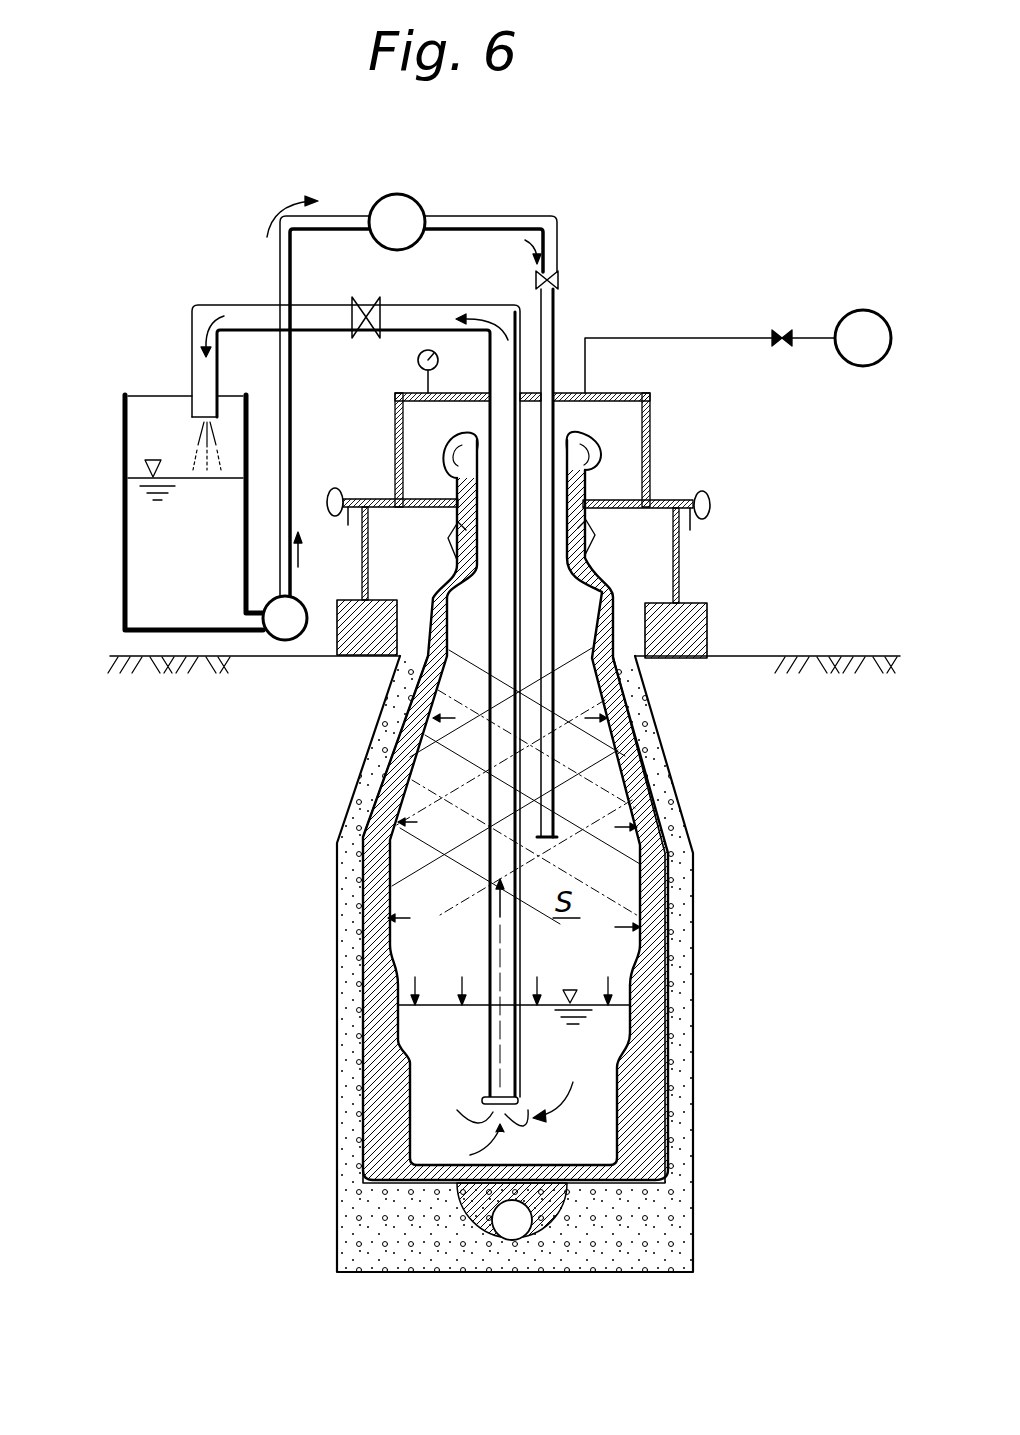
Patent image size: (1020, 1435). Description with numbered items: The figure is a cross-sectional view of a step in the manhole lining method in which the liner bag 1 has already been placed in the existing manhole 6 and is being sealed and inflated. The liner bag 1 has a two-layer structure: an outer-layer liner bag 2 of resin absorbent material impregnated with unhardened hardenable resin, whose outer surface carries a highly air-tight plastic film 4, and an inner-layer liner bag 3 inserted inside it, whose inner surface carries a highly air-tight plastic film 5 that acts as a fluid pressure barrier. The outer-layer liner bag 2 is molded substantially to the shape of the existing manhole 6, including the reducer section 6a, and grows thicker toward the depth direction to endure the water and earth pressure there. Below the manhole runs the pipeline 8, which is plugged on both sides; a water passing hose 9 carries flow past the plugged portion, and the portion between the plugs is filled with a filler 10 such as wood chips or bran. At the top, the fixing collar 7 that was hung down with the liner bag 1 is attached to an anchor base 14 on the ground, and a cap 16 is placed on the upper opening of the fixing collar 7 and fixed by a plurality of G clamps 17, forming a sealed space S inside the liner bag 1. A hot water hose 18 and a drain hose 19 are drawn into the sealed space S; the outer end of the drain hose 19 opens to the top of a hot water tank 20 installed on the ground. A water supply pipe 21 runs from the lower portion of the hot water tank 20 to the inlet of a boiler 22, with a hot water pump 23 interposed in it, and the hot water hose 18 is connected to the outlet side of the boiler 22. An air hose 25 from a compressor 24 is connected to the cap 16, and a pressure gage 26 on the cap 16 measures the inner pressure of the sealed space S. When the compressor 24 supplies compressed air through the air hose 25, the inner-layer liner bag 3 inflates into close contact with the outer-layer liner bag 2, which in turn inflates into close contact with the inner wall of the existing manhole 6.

The liner bag 1 is at (726, 712).
The outer-layer liner bag 2 is at (653, 737).
The inner-layer liner bag 3 is at (670, 773).
The plastic film 4 is at (612, 599).
The plastic film 5 is at (617, 1072).
The existing manhole 6 is at (337, 1120).
The reducer section 6a is at (370, 758).
The fixing collar 7 is at (587, 522).
The pipeline 8 is at (480, 1223).
The water passing hose 9 is at (523, 1243).
The filler 10 is at (550, 1167).
The anchor base 14 is at (392, 598).
The cap 16 is at (652, 428).
The G clamps 17 is at (335, 488).
The hot water hose 18 is at (560, 310).
The drain hose 19 is at (428, 306).
The hot water tank 20 is at (122, 512).
The water supply pipe 21 is at (292, 420).
The boiler 22 is at (413, 197).
The hot water pump 23 is at (305, 602).
The compressor 24 is at (857, 310).
The air hose 25 is at (660, 337).
The pressure gage 26 is at (418, 360).